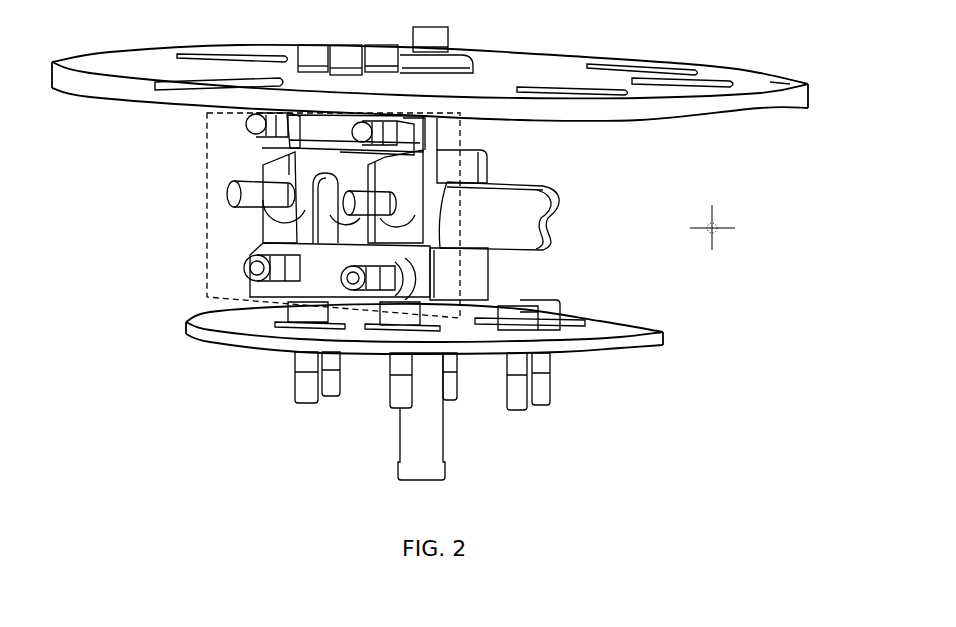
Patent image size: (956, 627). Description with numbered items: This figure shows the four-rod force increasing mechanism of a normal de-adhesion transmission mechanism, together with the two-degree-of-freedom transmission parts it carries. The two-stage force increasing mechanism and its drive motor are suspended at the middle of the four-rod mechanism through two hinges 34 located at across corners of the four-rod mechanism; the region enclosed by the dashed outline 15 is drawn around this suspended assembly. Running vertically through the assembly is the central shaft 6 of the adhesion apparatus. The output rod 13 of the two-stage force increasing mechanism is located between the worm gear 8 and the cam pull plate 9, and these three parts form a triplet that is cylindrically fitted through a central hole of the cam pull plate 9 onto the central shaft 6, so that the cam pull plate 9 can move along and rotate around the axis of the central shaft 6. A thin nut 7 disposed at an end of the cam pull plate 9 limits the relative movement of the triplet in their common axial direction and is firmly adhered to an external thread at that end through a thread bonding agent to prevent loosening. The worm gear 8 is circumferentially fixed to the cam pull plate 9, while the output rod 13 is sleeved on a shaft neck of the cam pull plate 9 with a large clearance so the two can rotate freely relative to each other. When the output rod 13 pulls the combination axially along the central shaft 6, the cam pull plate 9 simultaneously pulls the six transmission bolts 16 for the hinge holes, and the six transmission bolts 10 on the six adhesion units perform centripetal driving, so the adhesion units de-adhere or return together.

The central shaft 6 is at (422, 430).
The thin nut 7 is at (470, 164).
The worm gear 8 is at (518, 217).
The cam pull plate 9 is at (552, 345).
The transmission bolts 10 is at (553, 310).
The output rod 13 is at (472, 272).
The clamping assembly 15 is at (207, 243).
The transmission bolts for hinge holes 16 is at (355, 278).
The hinges 34 is at (370, 200).